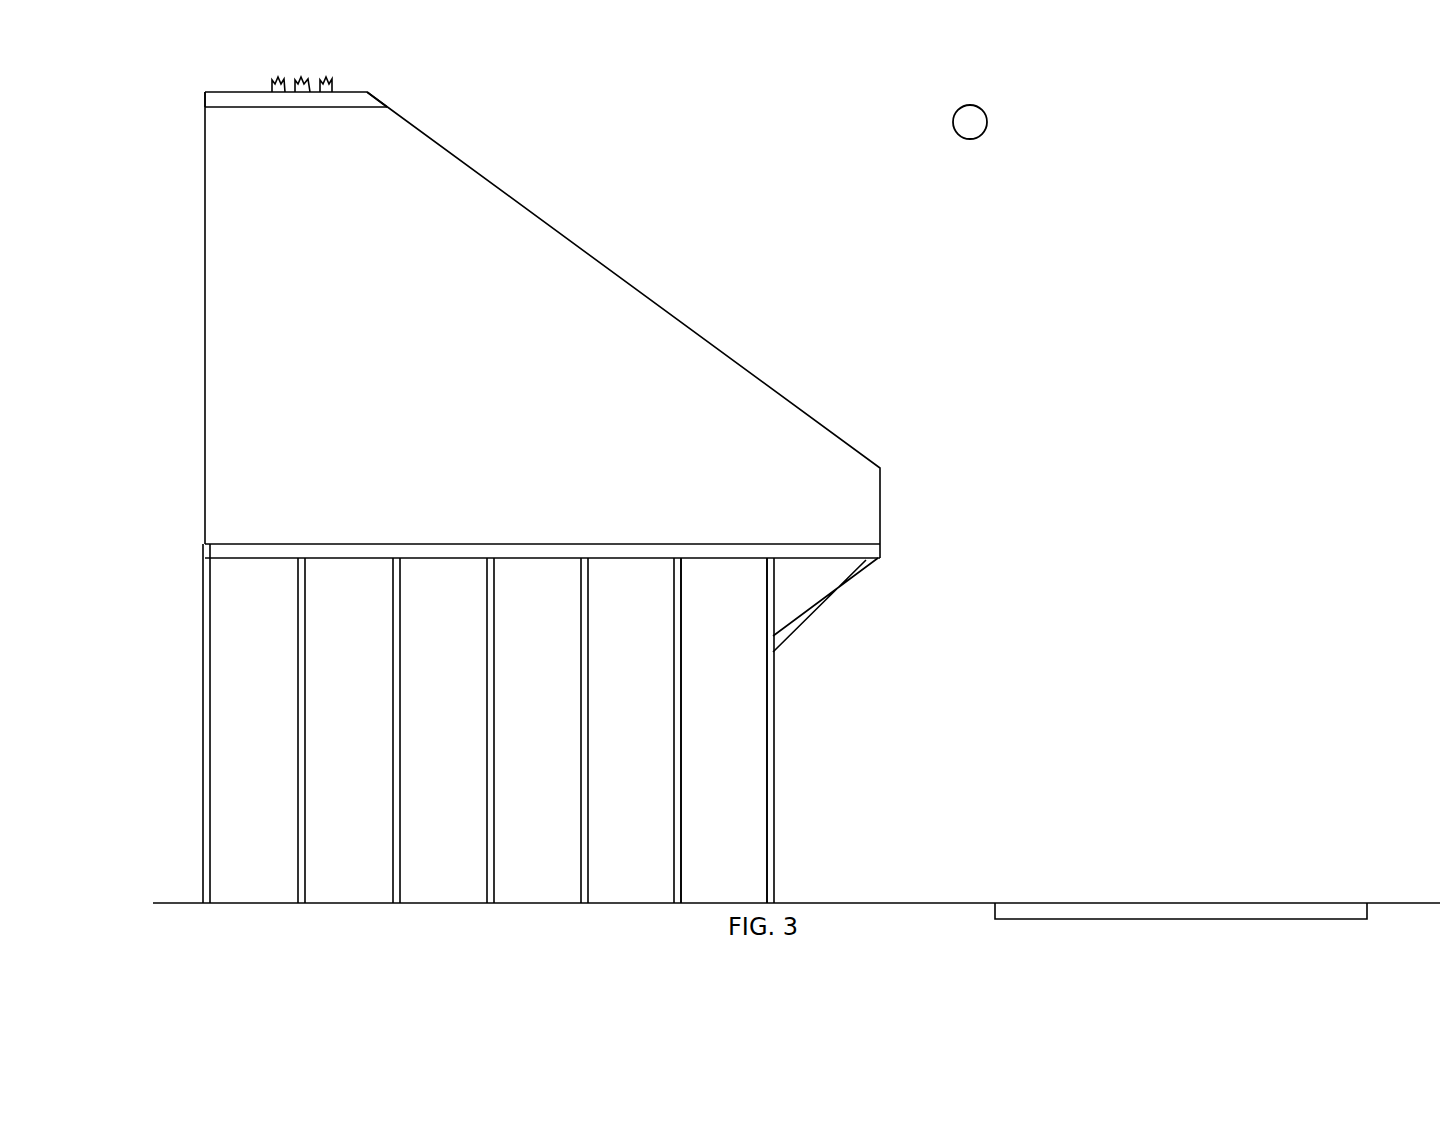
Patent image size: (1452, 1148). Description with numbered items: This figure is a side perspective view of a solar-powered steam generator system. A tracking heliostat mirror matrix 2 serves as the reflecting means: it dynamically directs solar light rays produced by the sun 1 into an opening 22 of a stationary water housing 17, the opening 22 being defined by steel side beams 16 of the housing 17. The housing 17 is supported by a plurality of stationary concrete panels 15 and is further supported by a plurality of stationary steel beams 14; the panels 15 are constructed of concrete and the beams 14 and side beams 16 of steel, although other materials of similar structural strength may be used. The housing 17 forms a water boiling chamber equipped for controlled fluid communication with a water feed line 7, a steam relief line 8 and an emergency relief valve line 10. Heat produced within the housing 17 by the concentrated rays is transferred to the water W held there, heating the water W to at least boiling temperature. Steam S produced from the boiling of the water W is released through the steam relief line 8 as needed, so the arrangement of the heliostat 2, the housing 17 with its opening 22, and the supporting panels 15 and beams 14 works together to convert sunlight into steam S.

The sun 1 is at (987, 122).
The tracking heliostat mirror matrix 2 is at (1338, 912).
The water feed line 7 is at (330, 92).
The steam relief line 8 is at (305, 81).
The emergency relief valve line 10 is at (268, 82).
The stationary steel beams 14 is at (680, 725).
The stationary concrete panels 15 is at (735, 813).
The steel side beams 16 is at (252, 550).
The stationary water housing 17 is at (752, 370).
The opening 22 is at (835, 613).
The steam S is at (205, 100).
The water W is at (237, 157).